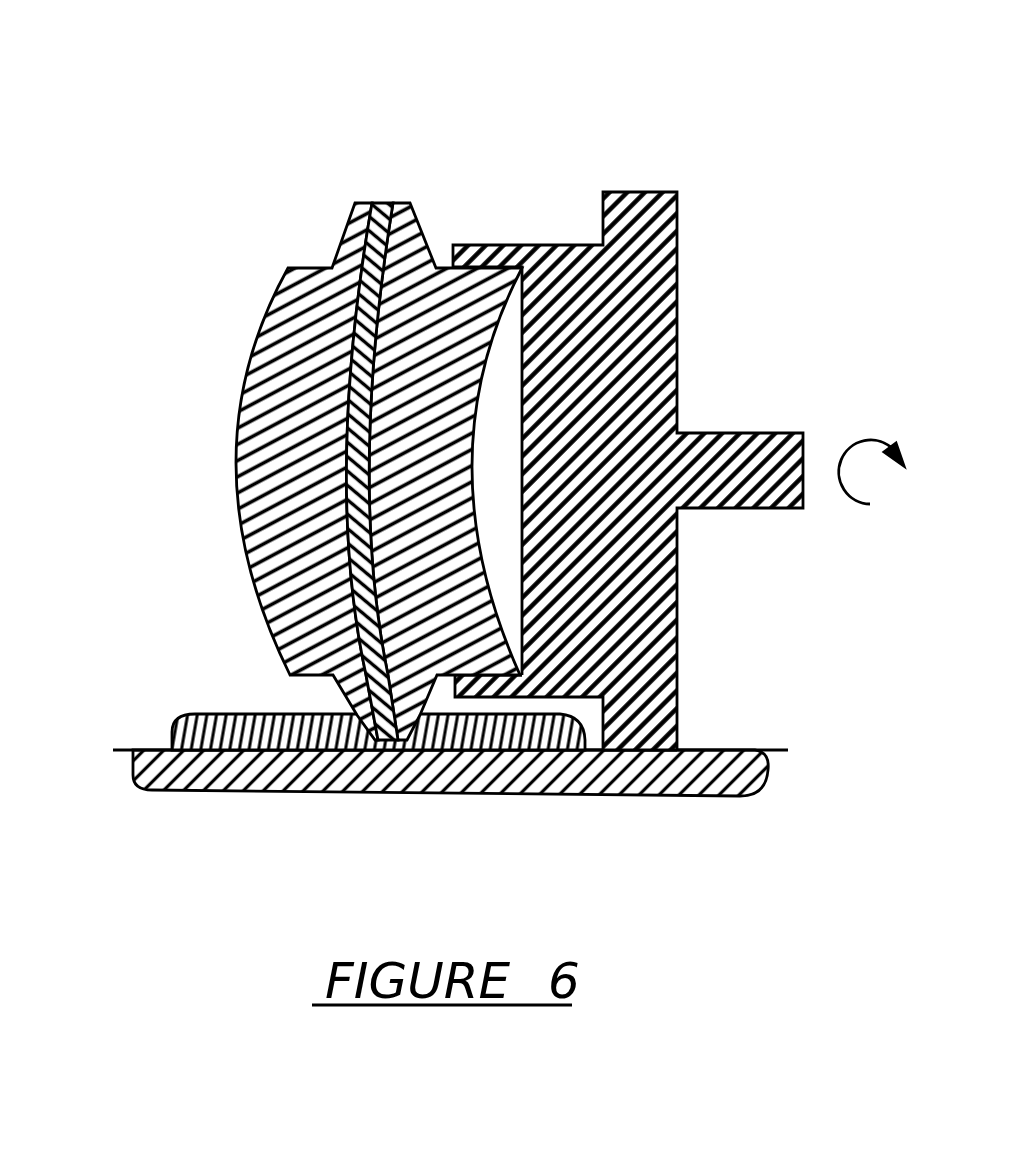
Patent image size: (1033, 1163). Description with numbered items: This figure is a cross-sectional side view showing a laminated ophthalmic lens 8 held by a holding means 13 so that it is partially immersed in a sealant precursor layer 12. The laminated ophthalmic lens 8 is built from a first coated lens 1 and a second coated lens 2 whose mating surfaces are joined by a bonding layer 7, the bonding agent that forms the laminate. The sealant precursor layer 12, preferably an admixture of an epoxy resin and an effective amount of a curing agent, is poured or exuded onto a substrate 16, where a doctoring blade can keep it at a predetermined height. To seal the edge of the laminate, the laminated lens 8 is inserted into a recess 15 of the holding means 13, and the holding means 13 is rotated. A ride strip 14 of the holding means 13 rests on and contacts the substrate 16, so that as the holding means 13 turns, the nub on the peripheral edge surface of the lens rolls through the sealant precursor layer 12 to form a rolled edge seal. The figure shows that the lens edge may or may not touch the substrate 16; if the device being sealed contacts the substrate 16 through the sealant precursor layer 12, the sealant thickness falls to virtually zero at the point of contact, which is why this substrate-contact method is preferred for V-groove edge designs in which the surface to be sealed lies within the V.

The first coated lens 1 is at (243, 432).
The second coated lens 2 is at (407, 327).
The bonding layer 7 is at (383, 203).
The laminated ophthalmic lens 8 is at (223, 181).
The sealant precursor layer 12 is at (248, 727).
The holding means 13 is at (680, 193).
The ride strip 14 is at (655, 720).
The recess 15 is at (518, 400).
The substrate 16 is at (685, 770).